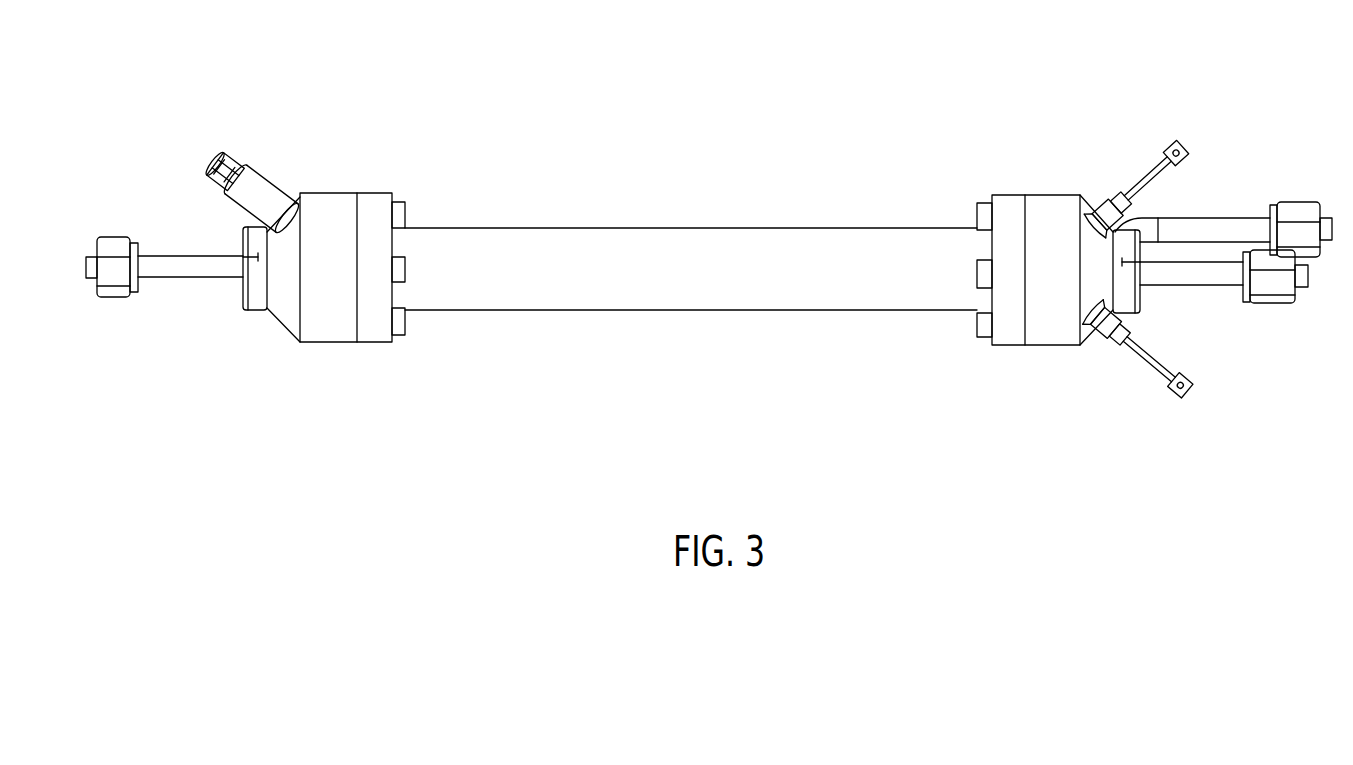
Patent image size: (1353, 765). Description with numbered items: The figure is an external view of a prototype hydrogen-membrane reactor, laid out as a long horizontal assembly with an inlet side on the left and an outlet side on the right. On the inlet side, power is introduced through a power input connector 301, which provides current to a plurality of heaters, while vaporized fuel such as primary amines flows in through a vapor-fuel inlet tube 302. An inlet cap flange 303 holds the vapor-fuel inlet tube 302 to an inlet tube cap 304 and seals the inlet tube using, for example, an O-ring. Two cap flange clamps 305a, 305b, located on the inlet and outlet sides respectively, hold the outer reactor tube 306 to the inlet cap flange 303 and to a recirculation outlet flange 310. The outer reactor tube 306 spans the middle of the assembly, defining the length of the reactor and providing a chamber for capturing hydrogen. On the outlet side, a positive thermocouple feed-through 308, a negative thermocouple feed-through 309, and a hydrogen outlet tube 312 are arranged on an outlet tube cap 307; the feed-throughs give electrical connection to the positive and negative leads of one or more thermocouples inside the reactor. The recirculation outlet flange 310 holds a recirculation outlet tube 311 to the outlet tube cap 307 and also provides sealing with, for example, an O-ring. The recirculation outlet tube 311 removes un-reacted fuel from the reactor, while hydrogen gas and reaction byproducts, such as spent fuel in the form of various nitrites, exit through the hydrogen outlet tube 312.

The power input connector 301 is at (227, 145).
The vapor-fuel inlet tube 302 is at (170, 285).
The inlet cap flange 303 is at (258, 315).
The inlet tube cap 304 is at (338, 190).
The cap flange clamp 305a is at (372, 345).
The cap flange clamp 305b is at (1000, 347).
The outer reactor tube 306 is at (645, 228).
The outlet tube cap 307 is at (1055, 190).
The positive thermocouple feed-through 308 is at (1180, 130).
The negative thermocouple feed-through 309 is at (1133, 352).
The recirculation outlet flange 310 is at (1138, 317).
The recirculation outlet tube 311 is at (1222, 290).
The hydrogen outlet tube 312 is at (1248, 215).